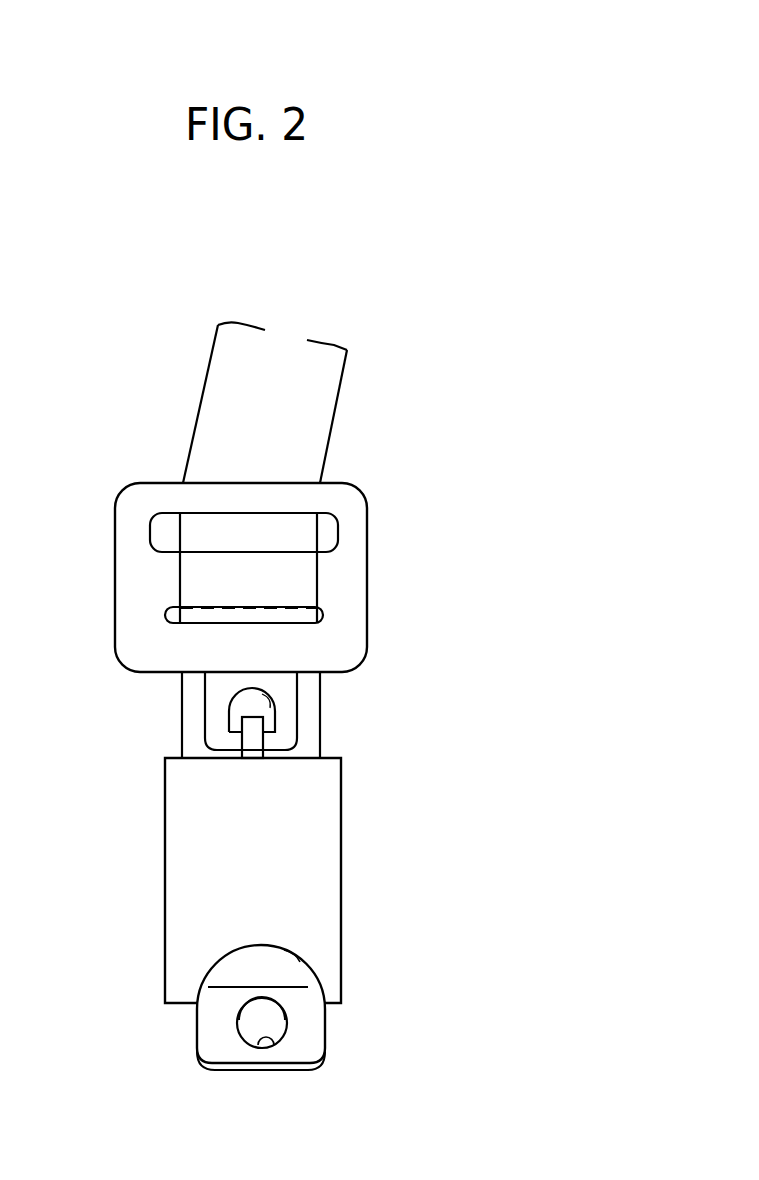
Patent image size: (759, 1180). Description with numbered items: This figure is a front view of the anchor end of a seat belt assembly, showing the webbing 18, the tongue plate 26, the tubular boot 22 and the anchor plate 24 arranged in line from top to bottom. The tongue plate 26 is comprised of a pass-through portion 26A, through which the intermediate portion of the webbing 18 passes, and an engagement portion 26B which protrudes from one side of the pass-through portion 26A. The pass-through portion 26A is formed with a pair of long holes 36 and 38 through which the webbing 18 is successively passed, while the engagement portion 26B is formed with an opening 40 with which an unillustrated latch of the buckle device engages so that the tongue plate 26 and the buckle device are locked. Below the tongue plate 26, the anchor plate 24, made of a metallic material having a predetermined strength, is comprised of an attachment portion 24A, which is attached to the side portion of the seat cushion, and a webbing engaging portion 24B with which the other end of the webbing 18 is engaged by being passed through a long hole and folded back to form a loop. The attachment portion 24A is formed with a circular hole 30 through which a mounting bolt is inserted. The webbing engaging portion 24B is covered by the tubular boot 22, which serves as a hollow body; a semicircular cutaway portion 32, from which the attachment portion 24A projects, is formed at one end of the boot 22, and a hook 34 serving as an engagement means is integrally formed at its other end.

The webbing 18 is at (323, 390).
The tubular boot 22 is at (325, 847).
The anchor plate 24 is at (250, 1028).
The attachment portion 24A is at (203, 1038).
The webbing engaging portion 24B is at (232, 972).
The tongue plate 26 is at (260, 552).
The pass-through portion 26A is at (350, 578).
The engagement portion 26B is at (297, 692).
The circular hole 30 is at (270, 1046).
The semicircular cutaway portion 32 is at (300, 963).
The hook 34 is at (232, 728).
The long hole 36 is at (157, 530).
The long hole 38 is at (167, 613).
The opening 40 is at (258, 710).